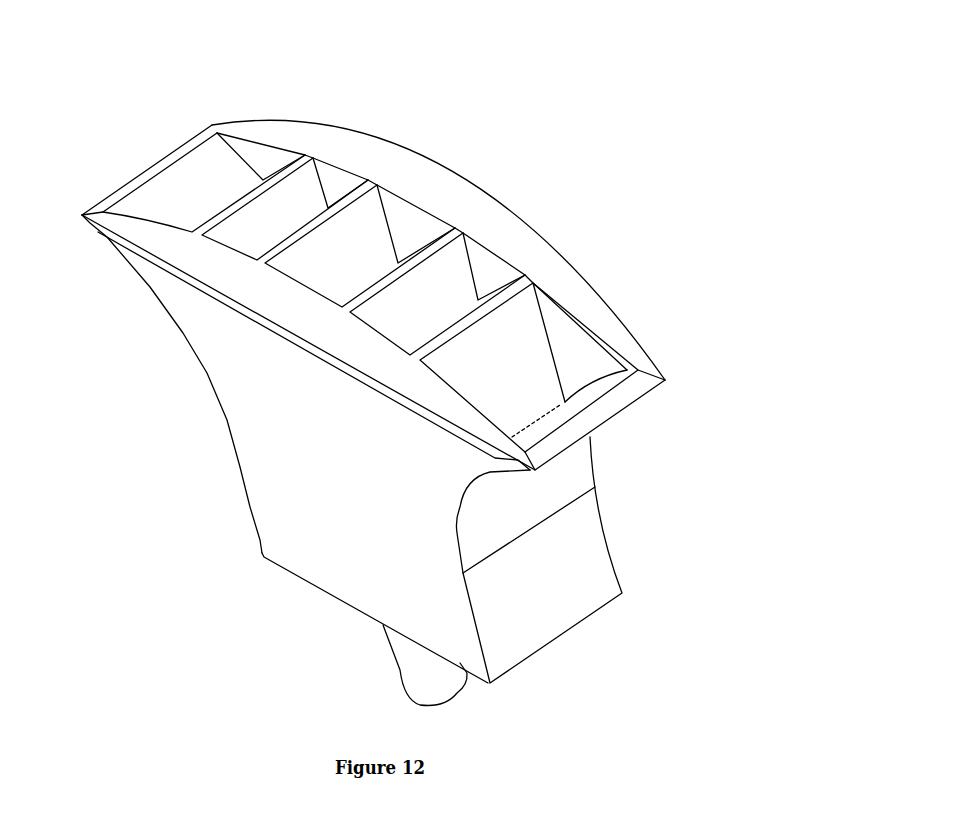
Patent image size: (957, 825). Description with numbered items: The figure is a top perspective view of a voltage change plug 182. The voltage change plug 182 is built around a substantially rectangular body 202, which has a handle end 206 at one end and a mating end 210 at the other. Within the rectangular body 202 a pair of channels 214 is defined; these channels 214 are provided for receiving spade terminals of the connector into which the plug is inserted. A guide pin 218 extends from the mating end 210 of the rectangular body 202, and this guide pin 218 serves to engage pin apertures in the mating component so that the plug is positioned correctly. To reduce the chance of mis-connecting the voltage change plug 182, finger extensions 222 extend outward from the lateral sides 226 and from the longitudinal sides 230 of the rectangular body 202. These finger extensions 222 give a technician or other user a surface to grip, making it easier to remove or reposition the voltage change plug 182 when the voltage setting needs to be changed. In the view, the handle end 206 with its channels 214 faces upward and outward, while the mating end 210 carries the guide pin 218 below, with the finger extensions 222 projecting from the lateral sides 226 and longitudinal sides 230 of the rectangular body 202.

The voltage change plug 182 is at (560, 90).
The rectangular body 202 is at (272, 525).
The handle end 206 is at (248, 270).
The mating end 210 is at (325, 592).
The channels 214 is at (309, 192).
The guide pin 218 is at (402, 670).
The finger extensions 222 is at (645, 402).
The lateral sides 226 is at (610, 421).
The longitudinal sides 230 is at (433, 162).